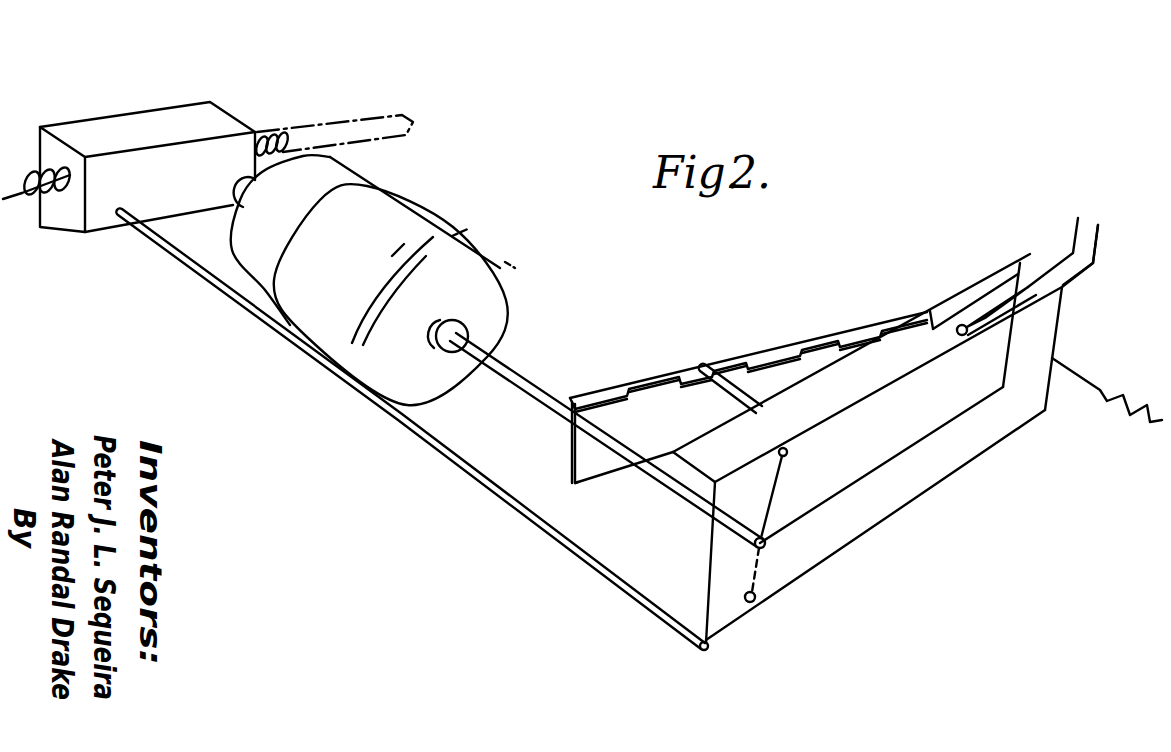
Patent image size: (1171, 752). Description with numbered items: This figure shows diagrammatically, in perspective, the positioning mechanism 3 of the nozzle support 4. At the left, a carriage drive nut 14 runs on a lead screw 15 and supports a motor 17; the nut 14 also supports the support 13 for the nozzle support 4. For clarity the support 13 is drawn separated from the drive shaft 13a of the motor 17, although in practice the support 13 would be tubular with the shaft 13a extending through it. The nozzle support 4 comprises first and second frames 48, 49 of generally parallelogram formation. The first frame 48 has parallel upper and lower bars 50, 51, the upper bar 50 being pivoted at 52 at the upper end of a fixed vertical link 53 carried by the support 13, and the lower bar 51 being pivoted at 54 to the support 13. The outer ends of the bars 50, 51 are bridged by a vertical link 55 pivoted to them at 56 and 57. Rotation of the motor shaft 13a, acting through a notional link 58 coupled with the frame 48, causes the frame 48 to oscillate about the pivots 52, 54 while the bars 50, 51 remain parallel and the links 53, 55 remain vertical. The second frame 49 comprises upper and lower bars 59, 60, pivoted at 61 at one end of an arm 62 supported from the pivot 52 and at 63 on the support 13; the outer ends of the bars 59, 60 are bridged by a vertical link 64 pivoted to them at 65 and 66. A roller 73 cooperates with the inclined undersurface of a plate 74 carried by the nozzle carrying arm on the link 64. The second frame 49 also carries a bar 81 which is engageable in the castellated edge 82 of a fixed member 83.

The positioning mechanism 3 is at (322, 400).
The nozzle support 4 is at (799, 326).
The support 13 is at (437, 453).
The drive shaft 13a is at (545, 388).
The carriage drive nut 14 is at (141, 118).
The lead screw 15 is at (329, 130).
The motor 17 is at (415, 214).
The first frame 48 is at (844, 412).
The second frame 49 is at (842, 406).
The upper bar 50 is at (823, 424).
The lower bar 51 is at (884, 540).
The pivot 52 is at (717, 478).
The fixed vertical link 53 is at (707, 540).
The pivot 54 is at (713, 648).
The vertical link 55 is at (1057, 344).
The pivot 56 is at (1064, 290).
The pivot 57 is at (1046, 412).
The notional link 58 is at (779, 481).
The upper bar 59 is at (856, 354).
The lower bar 60 is at (858, 470).
The pivot 61 is at (677, 454).
The arm 62 is at (683, 453).
The pivot 63 is at (661, 603).
The vertical link 64 is at (1017, 328).
The pivot 65 is at (1034, 253).
The pivot 66 is at (1002, 392).
The roller 73 is at (942, 340).
The plate 74 is at (968, 296).
The bar 81 is at (700, 370).
The castellated edge 82 is at (748, 362).
The fixed member 83 is at (590, 452).